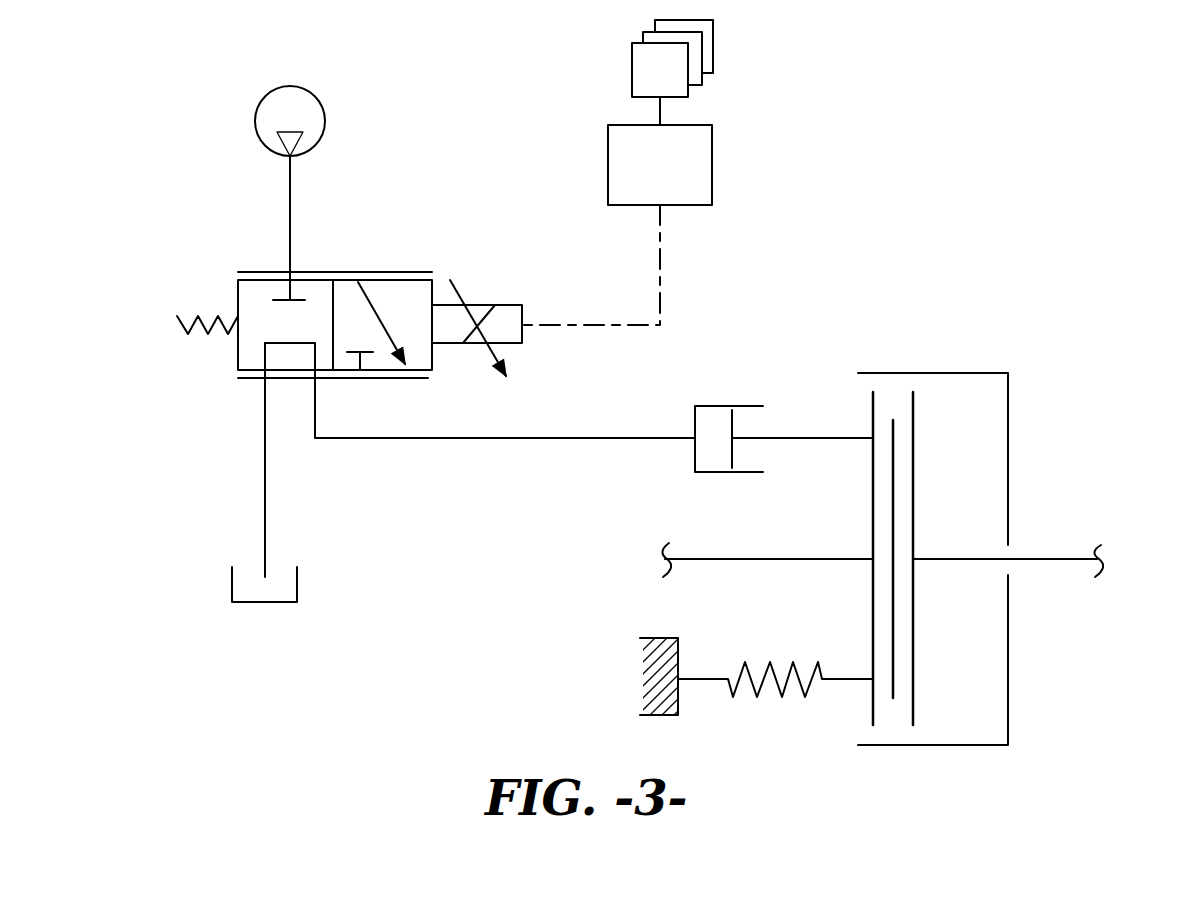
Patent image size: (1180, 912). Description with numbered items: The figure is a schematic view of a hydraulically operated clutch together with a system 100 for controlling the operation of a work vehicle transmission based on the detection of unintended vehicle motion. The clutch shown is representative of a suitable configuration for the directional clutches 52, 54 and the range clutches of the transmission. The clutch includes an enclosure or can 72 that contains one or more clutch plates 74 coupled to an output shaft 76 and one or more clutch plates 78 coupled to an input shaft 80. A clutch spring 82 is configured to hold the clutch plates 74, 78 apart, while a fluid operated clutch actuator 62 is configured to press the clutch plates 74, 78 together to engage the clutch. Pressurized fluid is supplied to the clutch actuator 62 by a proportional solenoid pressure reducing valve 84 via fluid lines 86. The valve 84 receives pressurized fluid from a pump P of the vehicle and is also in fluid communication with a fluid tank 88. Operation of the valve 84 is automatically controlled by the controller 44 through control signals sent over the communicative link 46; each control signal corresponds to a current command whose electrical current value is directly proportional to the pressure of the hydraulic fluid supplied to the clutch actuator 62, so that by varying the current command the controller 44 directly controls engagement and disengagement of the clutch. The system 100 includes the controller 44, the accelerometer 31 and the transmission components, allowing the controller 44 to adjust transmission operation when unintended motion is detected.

The pump P is at (327, 110).
The proportional solenoid pressure reducing valve 84 is at (238, 297).
The fluid lines 86 is at (288, 230).
The fluid tank 88 is at (232, 582).
The accelerometer 31 is at (648, 81).
The controller 44 is at (645, 180).
The communicative link 46 is at (662, 303).
The clutch actuator 62 is at (733, 423).
The can 72 is at (955, 372).
The clutch plates 74 is at (913, 478).
The output shaft 76 is at (1038, 558).
The clutch plates 78 is at (872, 640).
The input shaft 80 is at (700, 558).
The clutch spring 82 is at (773, 685).
The system 100 is at (962, 114).
The directional clutch 52 is at (1042, 215).
The directional clutch 54 is at (940, 250).